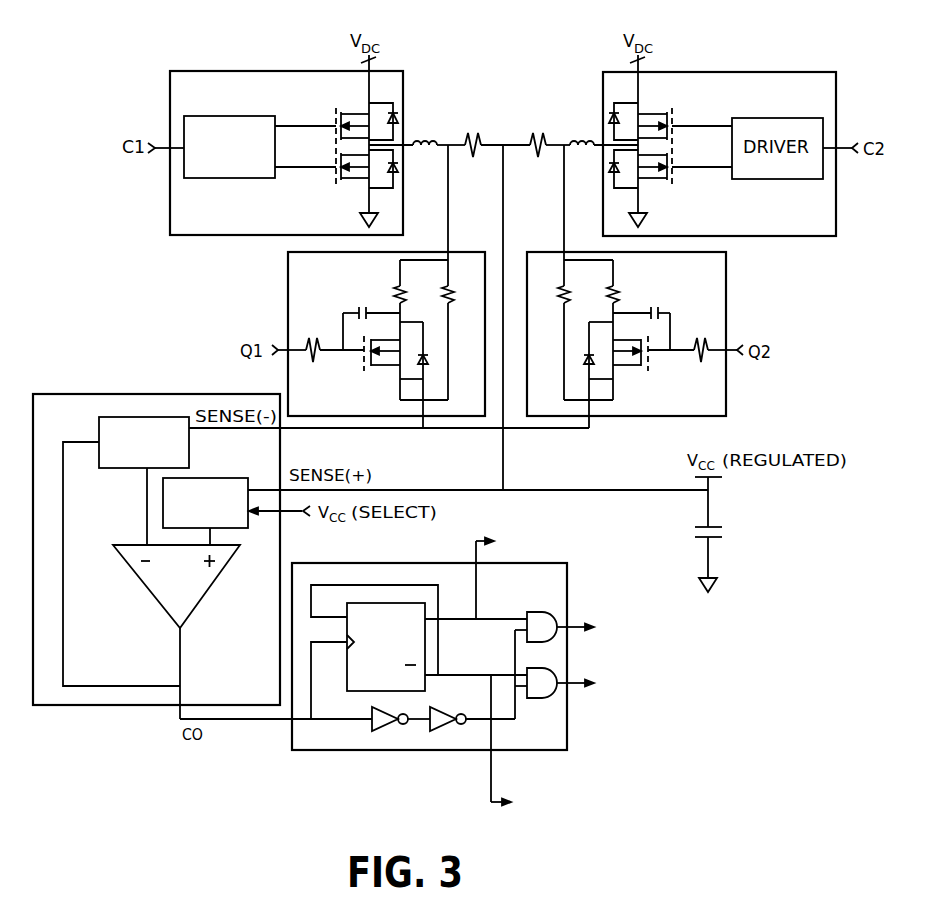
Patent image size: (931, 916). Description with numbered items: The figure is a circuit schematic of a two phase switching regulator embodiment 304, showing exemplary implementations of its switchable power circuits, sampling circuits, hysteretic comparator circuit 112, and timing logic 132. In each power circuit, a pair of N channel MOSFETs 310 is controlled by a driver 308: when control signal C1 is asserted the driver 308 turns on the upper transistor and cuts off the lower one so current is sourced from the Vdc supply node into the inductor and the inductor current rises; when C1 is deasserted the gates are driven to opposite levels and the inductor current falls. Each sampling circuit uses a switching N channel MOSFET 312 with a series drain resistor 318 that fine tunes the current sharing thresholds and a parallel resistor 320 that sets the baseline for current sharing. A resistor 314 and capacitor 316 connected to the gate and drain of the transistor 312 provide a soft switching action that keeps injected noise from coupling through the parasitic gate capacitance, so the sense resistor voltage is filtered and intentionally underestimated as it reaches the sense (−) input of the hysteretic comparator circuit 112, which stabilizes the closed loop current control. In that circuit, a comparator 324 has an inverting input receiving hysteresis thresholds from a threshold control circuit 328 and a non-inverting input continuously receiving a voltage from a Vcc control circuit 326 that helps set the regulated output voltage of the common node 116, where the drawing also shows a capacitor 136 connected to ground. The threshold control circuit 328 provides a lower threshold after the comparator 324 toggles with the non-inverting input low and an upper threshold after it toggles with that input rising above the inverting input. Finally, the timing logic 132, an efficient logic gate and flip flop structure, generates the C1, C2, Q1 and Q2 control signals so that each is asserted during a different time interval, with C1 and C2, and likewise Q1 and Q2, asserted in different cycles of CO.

The driver 308 is at (245, 169).
The pair of N channel MOSFETs 310 is at (325, 194).
The switching N channel MOSFET 312 is at (369, 387).
The resistor 314 is at (314, 336).
The capacitor 316 is at (362, 305).
The series drain resistor 318 is at (406, 288).
The parallel resistor 320 is at (452, 288).
The hysteretic comparator circuit 112 is at (73, 706).
The comparator 324 is at (153, 591).
The Vcc control circuit 326 is at (238, 468).
The threshold control circuit 328 is at (112, 469).
The timing logic 132 is at (326, 750).
The common node 116 is at (580, 492).
The output capacitor 136 is at (725, 520).
The switching regulator embodiment 304 is at (668, 761).